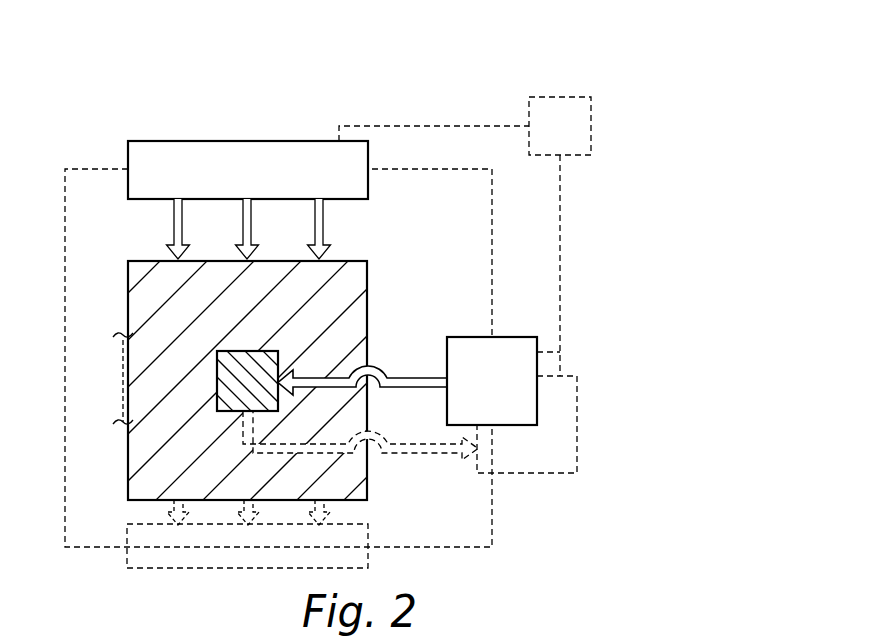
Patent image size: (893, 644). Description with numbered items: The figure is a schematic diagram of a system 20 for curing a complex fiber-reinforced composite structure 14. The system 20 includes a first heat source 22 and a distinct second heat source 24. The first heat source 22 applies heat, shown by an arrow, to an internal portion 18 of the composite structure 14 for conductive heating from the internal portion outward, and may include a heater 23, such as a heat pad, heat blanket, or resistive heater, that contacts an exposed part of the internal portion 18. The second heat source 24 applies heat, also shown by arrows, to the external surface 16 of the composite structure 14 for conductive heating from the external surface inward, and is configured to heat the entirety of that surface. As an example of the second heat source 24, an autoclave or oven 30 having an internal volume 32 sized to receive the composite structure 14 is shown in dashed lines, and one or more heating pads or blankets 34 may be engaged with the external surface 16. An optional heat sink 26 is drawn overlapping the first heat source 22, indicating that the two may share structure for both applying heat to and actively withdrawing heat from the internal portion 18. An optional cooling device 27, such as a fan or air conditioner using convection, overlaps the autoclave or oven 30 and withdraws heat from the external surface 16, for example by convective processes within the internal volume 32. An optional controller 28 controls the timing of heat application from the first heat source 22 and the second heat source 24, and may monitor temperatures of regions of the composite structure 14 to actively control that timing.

The system for curing complex fiber-reinforced composite structures 20 is at (706, 50).
The second heat source 24 is at (208, 141).
The external surface 16 is at (345, 260).
The complex fiber-reinforced composite structure 14 is at (374, 314).
The internal portion 18 is at (217, 368).
The first heat source 22 is at (516, 337).
The heater 23 is at (465, 347).
The heat sink 26 is at (577, 447).
The cooling device 27 is at (163, 568).
The controller 28 is at (568, 97).
The autoclave or oven 30 is at (65, 337).
The internal volume 32 is at (83, 493).
The heating pads or blankets 34 is at (123, 389).